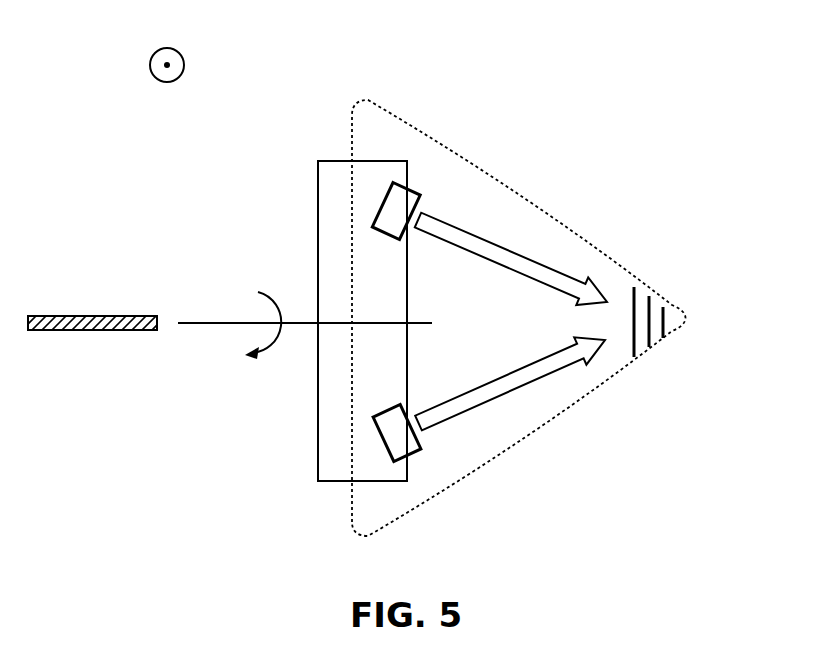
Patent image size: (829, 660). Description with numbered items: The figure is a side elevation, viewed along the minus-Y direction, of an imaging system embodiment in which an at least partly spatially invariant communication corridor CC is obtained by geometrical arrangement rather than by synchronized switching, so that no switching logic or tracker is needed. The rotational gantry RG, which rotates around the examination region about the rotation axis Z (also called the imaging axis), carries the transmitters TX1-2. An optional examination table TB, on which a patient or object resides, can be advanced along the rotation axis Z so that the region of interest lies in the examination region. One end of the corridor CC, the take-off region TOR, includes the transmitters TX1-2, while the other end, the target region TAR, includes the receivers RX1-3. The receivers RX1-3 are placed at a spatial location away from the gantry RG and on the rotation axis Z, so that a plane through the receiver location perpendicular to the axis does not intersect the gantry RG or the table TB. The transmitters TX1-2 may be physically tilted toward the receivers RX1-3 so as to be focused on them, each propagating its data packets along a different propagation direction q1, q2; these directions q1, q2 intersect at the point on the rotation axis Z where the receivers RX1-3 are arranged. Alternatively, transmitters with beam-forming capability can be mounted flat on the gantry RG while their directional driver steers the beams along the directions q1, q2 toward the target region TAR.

The examination table TB is at (91, 316).
The rotation axis Z is at (304, 339).
The take-off region TOR is at (355, 383).
The rotational gantry RG is at (340, 177).
The communication corridor CC is at (608, 390).
The transmitters TX1-2 is at (405, 407).
The first propagation direction q1 is at (511, 259).
The second propagation direction q2 is at (510, 383).
The target region TAR is at (662, 347).
The receivers RX1-3 is at (711, 330).